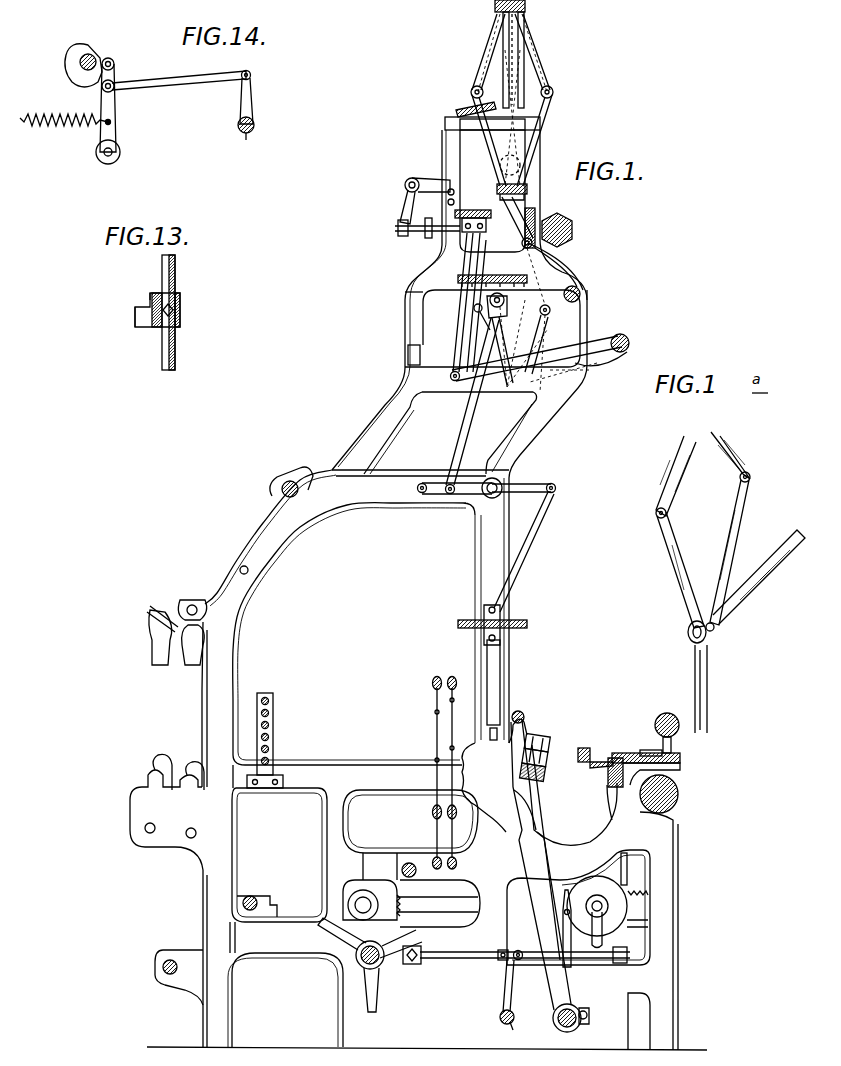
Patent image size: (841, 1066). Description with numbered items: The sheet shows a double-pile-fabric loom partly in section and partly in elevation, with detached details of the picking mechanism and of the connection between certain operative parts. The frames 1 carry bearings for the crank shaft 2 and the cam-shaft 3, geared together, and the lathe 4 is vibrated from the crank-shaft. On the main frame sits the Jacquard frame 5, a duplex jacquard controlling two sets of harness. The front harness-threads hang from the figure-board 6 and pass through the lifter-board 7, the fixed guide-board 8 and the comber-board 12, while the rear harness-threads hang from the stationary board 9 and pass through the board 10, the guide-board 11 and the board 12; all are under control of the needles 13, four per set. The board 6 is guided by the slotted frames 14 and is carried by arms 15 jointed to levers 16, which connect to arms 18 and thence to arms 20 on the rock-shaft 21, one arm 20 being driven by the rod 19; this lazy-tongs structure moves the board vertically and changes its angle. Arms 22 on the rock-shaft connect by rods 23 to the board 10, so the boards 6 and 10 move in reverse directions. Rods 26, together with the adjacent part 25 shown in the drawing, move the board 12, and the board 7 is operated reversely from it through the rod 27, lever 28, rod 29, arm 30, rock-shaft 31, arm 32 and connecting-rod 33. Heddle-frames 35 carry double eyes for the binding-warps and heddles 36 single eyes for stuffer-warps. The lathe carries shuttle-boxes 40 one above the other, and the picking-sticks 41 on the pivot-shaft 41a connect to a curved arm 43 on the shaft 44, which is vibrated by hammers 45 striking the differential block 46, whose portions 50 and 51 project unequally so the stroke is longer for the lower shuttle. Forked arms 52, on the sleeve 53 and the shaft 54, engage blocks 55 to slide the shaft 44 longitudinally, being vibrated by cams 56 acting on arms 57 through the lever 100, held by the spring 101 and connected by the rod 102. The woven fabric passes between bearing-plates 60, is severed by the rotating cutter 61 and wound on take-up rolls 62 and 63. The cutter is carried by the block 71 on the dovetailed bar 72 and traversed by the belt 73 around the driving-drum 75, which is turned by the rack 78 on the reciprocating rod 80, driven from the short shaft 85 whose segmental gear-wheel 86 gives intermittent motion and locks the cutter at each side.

In FIG. 1, the frames 1 is at (418, 583).
In FIG. 1, the main driving or crank shaft 2 is at (401, 871).
In FIG. 14, the cam-shaft 3 is at (109, 58).
In FIG. 1, the cam-shaft 3 is at (360, 965).
In FIG. 1, the lathe 4 is at (546, 871).
In FIG. 1, the Jacquard frame 5 is at (492, 310).
In FIG. 1, the figure-board 6 is at (526, 6).
In FIG. 1, the lifter-board 7 is at (530, 188).
In FIG. 1, the fixed guide-board 8 is at (536, 258).
In FIG. 1, the stationary board 9 is at (473, 105).
In FIG. 1, the figure-board 10 is at (473, 214).
In FIG. 1, the guide-board 11 is at (458, 280).
In FIG. 1, the comber-board 12 is at (527, 624).
In FIG. 1, the needles 13 is at (548, 215).
In FIG. 1, the oppositely-slotted frames 14 is at (513, 60).
In FIG. 1, the arms 15 is at (480, 64).
In FIG. 1a, the levers 16 is at (670, 470).
In FIG. 1, the levers 16 is at (540, 112).
In FIG. 1a, the arms 18 is at (672, 566).
In FIG. 1, the arms 18 is at (514, 348).
In FIG. 1a, the rod 19 is at (708, 680).
In FIG. 1a, the arms 20 is at (766, 580).
In FIG. 1, the arms 20 is at (595, 364).
In FIG. 1, the rock-shaft 21 is at (630, 343).
In FIG. 1, the arms 22 is at (537, 358).
In FIG. 1, the rods 23 is at (456, 342).
In FIG. 1, the rod 25 is at (473, 302).
In FIG. 1, the rods 26 is at (500, 673).
In FIG. 1, the rod 27 is at (523, 554).
In FIG. 1, the lever 28 is at (538, 480).
In FIG. 1, the rod 29 is at (468, 432).
In FIG. 1, the arm 30 is at (512, 305).
In FIG. 1, the rock-shaft 31 is at (581, 296).
In FIG. 1, the arm 32 is at (578, 268).
In FIG. 1, the connecting-rod 33 is at (523, 222).
In FIG. 1, the heddle-frames 35 is at (453, 715).
In FIG. 1, the heddle-frames 36 is at (435, 708).
In FIG. 1, the shuttle-boxes 40 is at (547, 745).
In FIG. 1, the picking-sticks 41 is at (552, 839).
In FIG. 1, the pivot-shaft 41a is at (578, 1024).
In FIG. 1, the curved arm 43 is at (572, 946).
In FIG. 13, the shaft 44 is at (175, 350).
In FIG. 1, the shaft 44 is at (470, 959).
In FIG. 1, the tappets or hammers 45 is at (318, 925).
In FIG. 13, the differential block 46 is at (181, 312).
In FIG. 1, the differential block 46 is at (437, 961).
In FIG. 13, the portion 50 is at (150, 298).
In FIG. 13, the portion 51 is at (135, 318).
In FIG. 1, the arms 52 is at (516, 986).
In FIG. 1, the sleeve 53 is at (500, 1017).
In FIG. 14, the shaft 54 is at (254, 144).
In FIG. 1, the shaft 54 is at (519, 1030).
In FIG. 1, the blocks 55 is at (514, 946).
In FIG. 14, the cams 56 is at (96, 48).
In FIG. 14, the arms 57 is at (255, 101).
In FIG. 1, the bearing-plates 60 is at (586, 748).
In FIG. 1, the rotating cutter 61 is at (611, 758).
In FIG. 1, the take-up roll 62 is at (667, 725).
In FIG. 14, the take-up roll 63 is at (254, 124).
In FIG. 1, the take-up roll 63 is at (680, 797).
In FIG. 1, the block 71 is at (646, 761).
In FIG. 1, the dovetailed bar 72 is at (651, 747).
In FIG. 1, the belt or band 73 is at (632, 869).
In FIG. 1, the driving-drum 75 is at (597, 912).
In FIG. 1, the rack 78 is at (638, 909).
In FIG. 1, the rod 80 is at (438, 903).
In FIG. 1, the short shaft 85 is at (370, 886).
In FIG. 1, the segmental gear-wheel 86 is at (390, 905).
In FIG. 14, the lever 100 is at (116, 104).
In FIG. 14, the spring 101 is at (65, 128).
In FIG. 14, the rod 102 is at (181, 75).